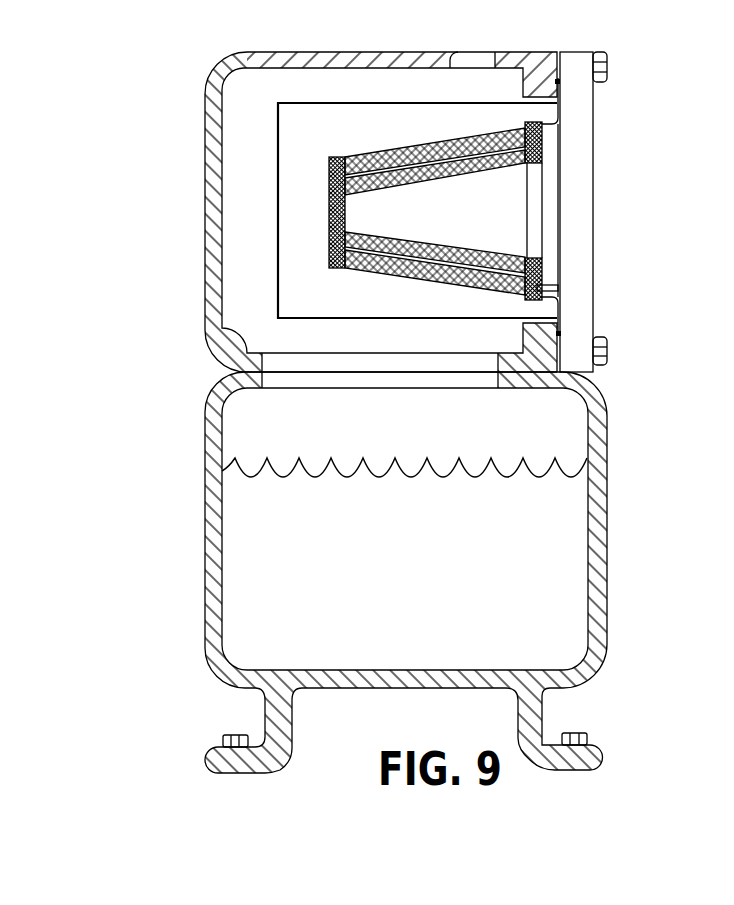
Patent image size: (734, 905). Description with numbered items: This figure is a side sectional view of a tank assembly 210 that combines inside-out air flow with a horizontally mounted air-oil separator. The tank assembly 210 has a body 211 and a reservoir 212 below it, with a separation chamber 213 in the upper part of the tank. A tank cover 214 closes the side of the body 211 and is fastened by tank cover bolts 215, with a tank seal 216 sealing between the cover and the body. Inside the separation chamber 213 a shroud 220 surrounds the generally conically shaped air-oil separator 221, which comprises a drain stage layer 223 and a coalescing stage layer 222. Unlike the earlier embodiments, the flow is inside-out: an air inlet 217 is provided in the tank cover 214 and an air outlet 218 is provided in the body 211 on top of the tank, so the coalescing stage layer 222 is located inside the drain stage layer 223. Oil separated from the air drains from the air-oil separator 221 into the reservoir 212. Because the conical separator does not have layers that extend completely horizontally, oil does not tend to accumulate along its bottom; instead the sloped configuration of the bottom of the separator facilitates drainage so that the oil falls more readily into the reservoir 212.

The tank assembly 210 is at (341, 393).
The body 211 is at (222, 151).
The reservoir 212 is at (236, 570).
The separation chamber 213 is at (315, 80).
The tank cover 214 is at (580, 308).
The tank cover bolts 215 is at (600, 66).
The tank seal 216 is at (562, 84).
The air inlet 217 is at (733, 148).
The air outlet 218 is at (458, 55).
The shroud 220 is at (278, 319).
The air-oil separator 221 is at (535, 245).
The coalescing stage layer 222 is at (445, 174).
The drain stage layer 223 is at (453, 139).